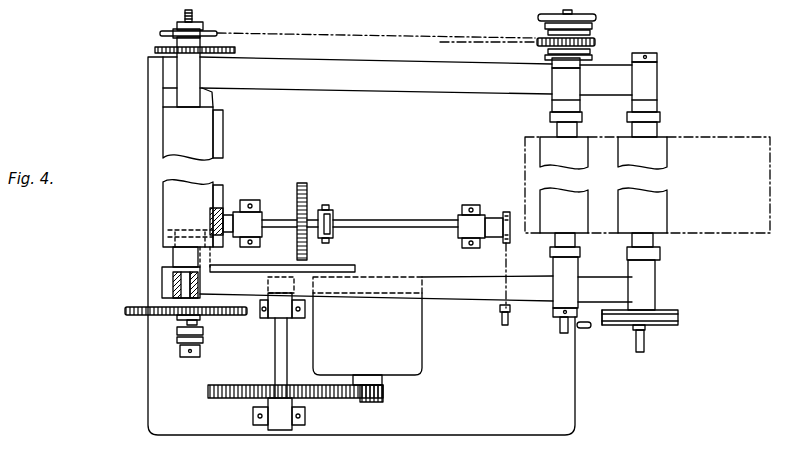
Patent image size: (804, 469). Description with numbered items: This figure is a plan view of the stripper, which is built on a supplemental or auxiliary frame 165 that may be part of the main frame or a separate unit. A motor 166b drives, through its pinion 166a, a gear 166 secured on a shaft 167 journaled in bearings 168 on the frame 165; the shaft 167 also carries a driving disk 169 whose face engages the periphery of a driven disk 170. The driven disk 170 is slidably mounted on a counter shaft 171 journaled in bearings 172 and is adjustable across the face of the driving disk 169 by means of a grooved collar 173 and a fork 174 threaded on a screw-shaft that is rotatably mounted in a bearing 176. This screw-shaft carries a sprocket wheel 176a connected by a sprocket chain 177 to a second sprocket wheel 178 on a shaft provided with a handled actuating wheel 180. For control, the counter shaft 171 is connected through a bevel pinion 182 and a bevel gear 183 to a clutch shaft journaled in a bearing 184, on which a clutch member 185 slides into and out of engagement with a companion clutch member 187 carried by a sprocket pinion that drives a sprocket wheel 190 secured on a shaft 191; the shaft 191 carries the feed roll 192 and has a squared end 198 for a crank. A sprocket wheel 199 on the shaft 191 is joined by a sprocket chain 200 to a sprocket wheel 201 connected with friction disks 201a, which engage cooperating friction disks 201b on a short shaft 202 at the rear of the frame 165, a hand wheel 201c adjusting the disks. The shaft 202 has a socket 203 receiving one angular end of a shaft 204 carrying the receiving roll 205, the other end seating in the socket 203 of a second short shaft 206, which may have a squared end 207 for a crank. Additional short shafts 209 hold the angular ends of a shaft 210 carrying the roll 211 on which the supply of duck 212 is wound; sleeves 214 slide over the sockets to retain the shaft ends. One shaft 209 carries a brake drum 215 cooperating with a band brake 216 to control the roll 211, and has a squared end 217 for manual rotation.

The auxiliary frame 165 is at (562, 391).
The gear 166 is at (325, 394).
The pinion 166a is at (385, 393).
The motor 166b is at (412, 343).
The shaft 167 is at (275, 358).
The bearings 168 is at (280, 421).
The driving disk 169 is at (355, 267).
The driven disk 170 is at (310, 191).
The counter shaft 171 is at (388, 222).
The bearings 172 is at (253, 220).
The grooved collar 173 is at (333, 232).
The fork 174 is at (331, 214).
The bearing 176 is at (494, 238).
The sprocket wheel 176a is at (508, 212).
The sprocket chain 177 is at (500, 280).
The sprocket wheel 178 is at (503, 321).
The handled actuating wheel 180 is at (578, 328).
The bevel pinion 182 is at (221, 210).
The bevel gear 183 is at (175, 232).
The bearing 184 is at (172, 258).
The clutch member 185 is at (204, 332).
The companion clutch member 187 is at (178, 318).
The sprocket wheel 190 is at (125, 311).
The shaft 191 is at (168, 283).
The feed roll 192 is at (195, 98).
The squared end 198 is at (193, 14).
The sprocket wheel 199 is at (160, 34).
The sprocket chain 200 is at (342, 33).
The sprocket wheel 201 is at (597, 42).
The friction disks 201a is at (548, 52).
The friction disks 201b is at (548, 58).
The hand wheel 201c is at (594, 18).
The short shaft 202 is at (581, 59).
The socket 203 is at (558, 105).
The shaft 204 is at (572, 131).
The receiving roll 205 is at (603, 217).
The short shaft 206 is at (556, 317).
The squared end 207 is at (562, 333).
The short shafts 209 is at (660, 55).
The shaft 210 is at (658, 132).
The roll 211 is at (664, 158).
The duck 212 is at (728, 233).
The sleeves 214 is at (550, 118).
The brake drum 215 is at (625, 325).
The band brake 216 is at (680, 318).
The squared end 217 is at (645, 347).